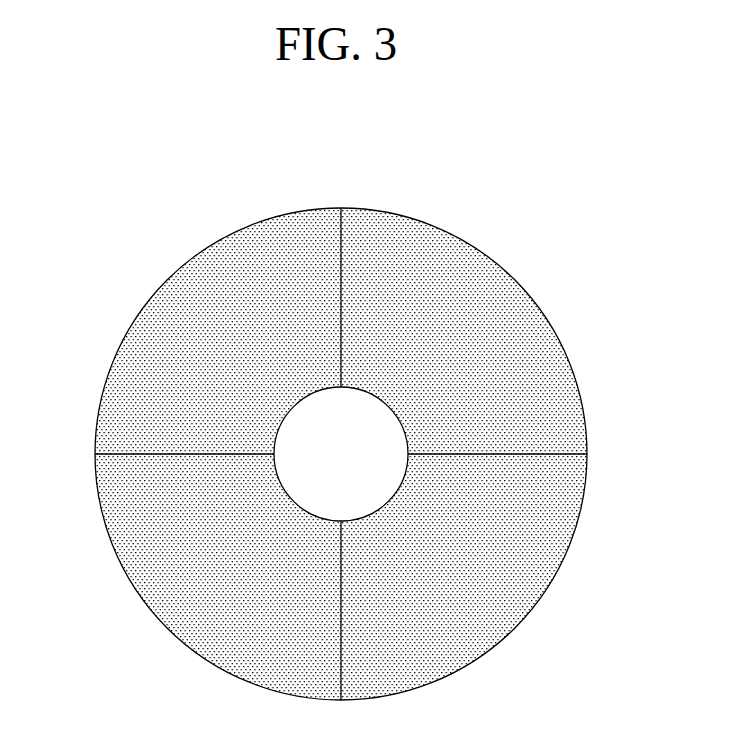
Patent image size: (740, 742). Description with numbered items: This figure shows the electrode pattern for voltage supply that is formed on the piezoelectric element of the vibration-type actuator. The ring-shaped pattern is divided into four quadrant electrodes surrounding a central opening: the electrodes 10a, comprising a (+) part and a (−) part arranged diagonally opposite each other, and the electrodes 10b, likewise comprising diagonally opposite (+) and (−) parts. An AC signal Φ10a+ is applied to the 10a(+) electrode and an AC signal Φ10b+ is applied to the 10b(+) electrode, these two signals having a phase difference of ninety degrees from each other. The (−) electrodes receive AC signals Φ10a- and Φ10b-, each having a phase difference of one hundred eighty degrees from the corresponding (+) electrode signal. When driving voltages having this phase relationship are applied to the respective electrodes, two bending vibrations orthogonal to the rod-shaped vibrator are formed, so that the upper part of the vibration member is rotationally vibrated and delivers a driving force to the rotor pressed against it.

The electrode 10a is at (335, 454).
The electrode 10b is at (341, 454).
The AC signal Φ10a− 10a- is at (513, 583).
The AC signal Φ10b− 10b- is at (167, 586).